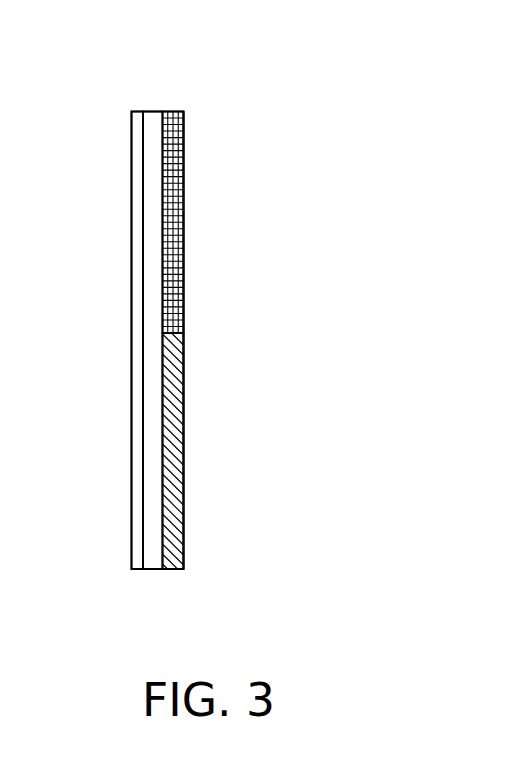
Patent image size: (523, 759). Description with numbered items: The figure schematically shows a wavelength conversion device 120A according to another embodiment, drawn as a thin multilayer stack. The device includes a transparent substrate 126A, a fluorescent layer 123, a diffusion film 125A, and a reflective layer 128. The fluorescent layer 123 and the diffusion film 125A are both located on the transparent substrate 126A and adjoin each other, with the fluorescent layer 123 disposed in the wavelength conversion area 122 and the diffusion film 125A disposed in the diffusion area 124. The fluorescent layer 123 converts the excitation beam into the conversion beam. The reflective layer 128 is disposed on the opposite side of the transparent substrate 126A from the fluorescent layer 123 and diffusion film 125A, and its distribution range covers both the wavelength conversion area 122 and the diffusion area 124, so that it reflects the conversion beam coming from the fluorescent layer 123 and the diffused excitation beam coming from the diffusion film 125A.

The wavelength conversion device 120A is at (448, 576).
The wavelength conversion area 122 is at (194, 446).
The fluorescent layer 123 is at (173, 515).
The diffusion area 124 is at (194, 207).
The diffusion film 125A is at (177, 134).
The transparent substrate 126A is at (156, 116).
The reflective layer 128 is at (135, 150).